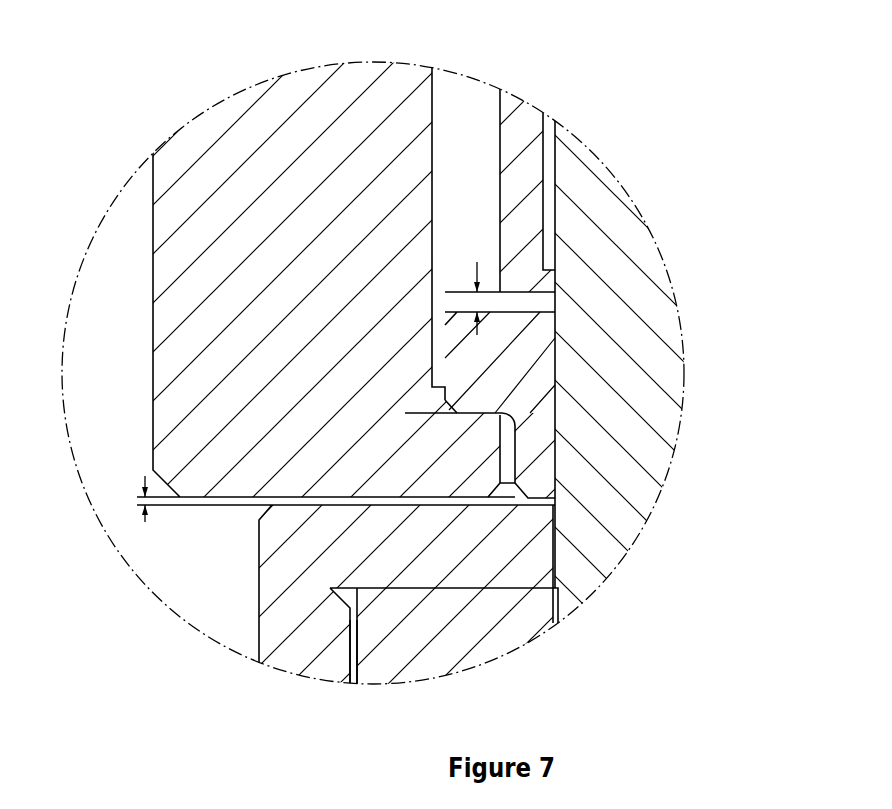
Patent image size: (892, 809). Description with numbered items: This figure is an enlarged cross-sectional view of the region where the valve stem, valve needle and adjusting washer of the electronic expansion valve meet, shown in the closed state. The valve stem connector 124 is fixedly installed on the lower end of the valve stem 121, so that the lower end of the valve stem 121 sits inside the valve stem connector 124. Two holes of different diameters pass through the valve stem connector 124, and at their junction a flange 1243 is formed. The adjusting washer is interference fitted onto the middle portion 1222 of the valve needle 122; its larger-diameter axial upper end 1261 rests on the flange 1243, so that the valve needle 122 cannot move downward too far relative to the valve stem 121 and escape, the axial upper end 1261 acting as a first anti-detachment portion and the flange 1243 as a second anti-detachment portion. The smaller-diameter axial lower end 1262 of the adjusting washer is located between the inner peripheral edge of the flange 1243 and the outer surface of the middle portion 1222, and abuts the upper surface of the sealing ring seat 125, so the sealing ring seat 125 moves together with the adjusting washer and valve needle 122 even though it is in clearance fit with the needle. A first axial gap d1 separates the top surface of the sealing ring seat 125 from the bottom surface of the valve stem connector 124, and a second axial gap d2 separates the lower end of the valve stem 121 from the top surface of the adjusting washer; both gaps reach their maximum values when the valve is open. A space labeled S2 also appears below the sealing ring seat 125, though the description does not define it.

The valve stem 121 is at (523, 167).
The valve needle 122 is at (645, 395).
The middle portion of the valve needle 1222 is at (693, 370).
The valve stem connector 124 is at (185, 238).
The flange 1243 is at (483, 438).
The sealing ring seat 125 is at (272, 575).
The axial upper end of the adjusting washer 1261 is at (525, 348).
The axial lower end of the adjusting washer 1262 is at (540, 478).
The first axial gap d1 is at (132, 495).
The second axial gap d2 is at (462, 297).
The second space S2 is at (383, 657).